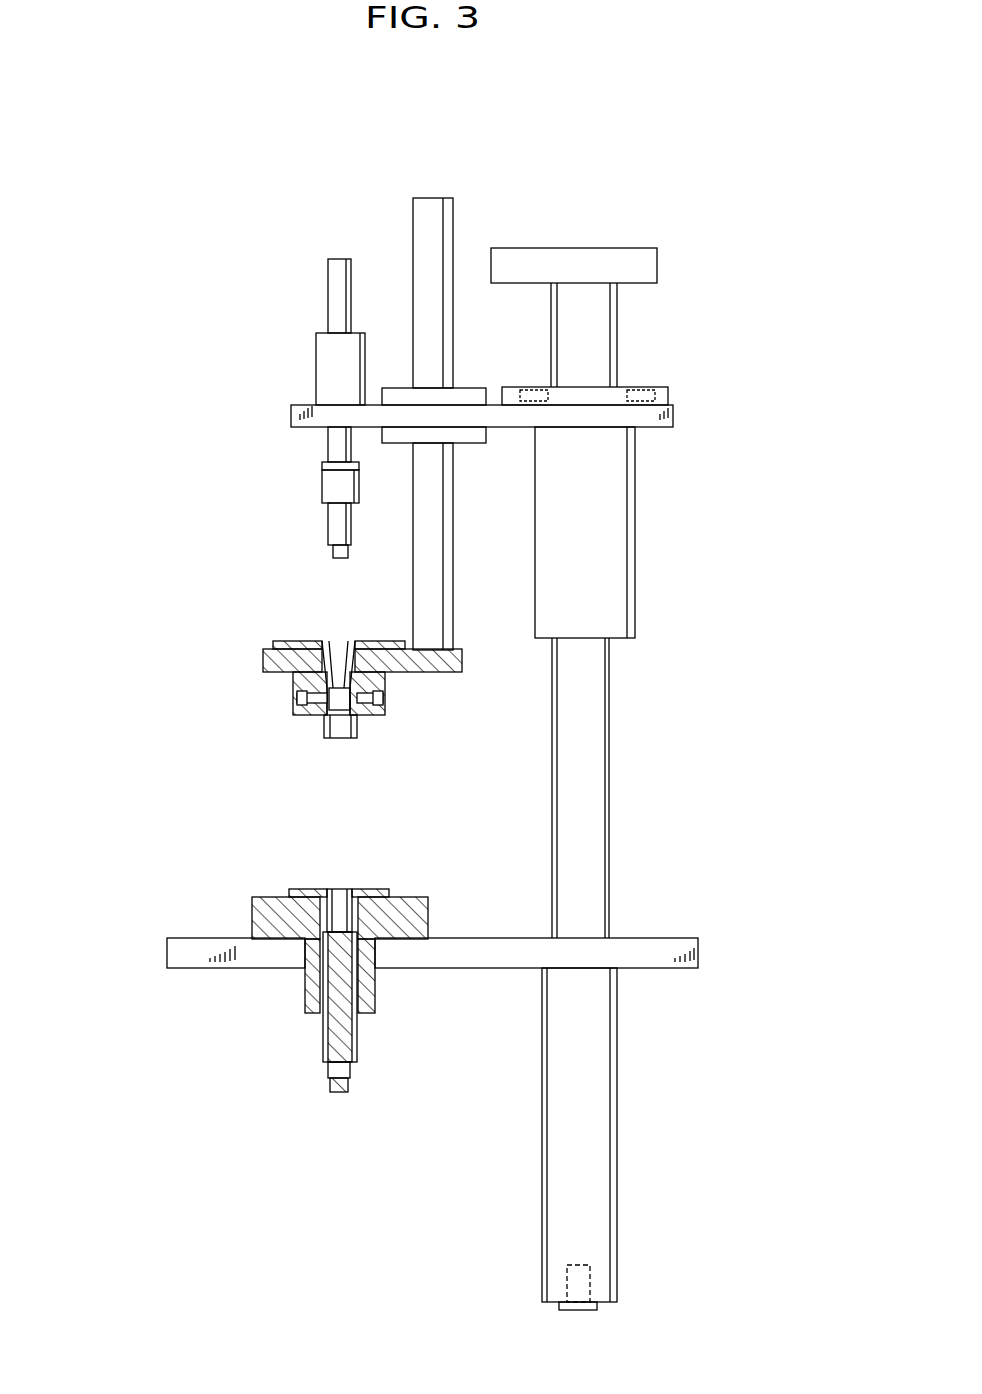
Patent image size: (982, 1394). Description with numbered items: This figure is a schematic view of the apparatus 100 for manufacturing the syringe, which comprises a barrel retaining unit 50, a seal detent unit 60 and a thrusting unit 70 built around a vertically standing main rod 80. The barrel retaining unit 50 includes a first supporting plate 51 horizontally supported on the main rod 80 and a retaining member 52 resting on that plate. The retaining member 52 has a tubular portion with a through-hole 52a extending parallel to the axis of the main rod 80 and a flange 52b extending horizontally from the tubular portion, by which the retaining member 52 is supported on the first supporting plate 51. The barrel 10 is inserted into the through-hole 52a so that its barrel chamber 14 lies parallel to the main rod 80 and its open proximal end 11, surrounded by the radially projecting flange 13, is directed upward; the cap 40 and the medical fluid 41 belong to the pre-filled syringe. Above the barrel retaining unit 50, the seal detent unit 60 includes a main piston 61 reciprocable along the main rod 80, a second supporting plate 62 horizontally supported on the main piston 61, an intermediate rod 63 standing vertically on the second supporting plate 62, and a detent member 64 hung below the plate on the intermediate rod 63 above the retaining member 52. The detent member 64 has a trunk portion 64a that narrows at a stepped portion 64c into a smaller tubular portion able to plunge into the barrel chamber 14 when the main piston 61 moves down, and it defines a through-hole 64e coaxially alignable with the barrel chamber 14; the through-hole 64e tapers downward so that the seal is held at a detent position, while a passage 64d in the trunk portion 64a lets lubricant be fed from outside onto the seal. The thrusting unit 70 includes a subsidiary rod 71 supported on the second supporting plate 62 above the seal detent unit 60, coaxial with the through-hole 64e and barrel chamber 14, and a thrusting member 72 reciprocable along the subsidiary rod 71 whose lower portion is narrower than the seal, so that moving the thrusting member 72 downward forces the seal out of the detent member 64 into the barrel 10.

The apparatus 100 is at (393, 218).
The thrusting unit 70 is at (295, 285).
The subsidiary rod 71 is at (330, 373).
The thrusting member 72 is at (335, 525).
The second supporting plate 62 is at (667, 412).
The intermediate rod 63 is at (434, 528).
The main piston 61 is at (613, 547).
The seal detent unit 60 is at (246, 630).
The detent member 64 is at (432, 666).
The trunk portion 64a is at (295, 690).
The passage 64d is at (295, 703).
The through-hole 64e is at (332, 645).
The stepped portion 64c is at (372, 717).
The barrel retaining unit 50 is at (395, 995).
The first supporting plate 51 is at (182, 958).
The retaining member 52 is at (307, 1010).
The through-hole 52a is at (302, 975).
The flange 52b is at (288, 922).
The barrel 10 is at (362, 1065).
The open proximal end 11 is at (335, 890).
The flange 13 is at (378, 890).
The barrel chamber 14 is at (327, 1037).
The medical fluid 41 is at (346, 1012).
The cap 40 is at (333, 1092).
The main rod 80 is at (593, 1153).